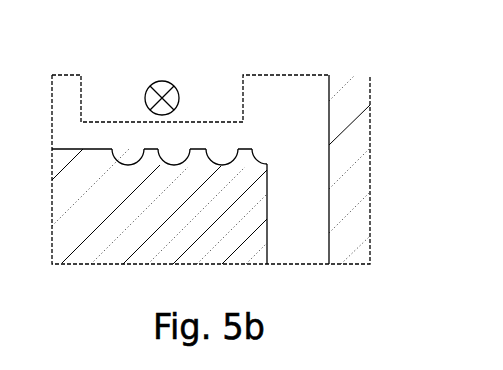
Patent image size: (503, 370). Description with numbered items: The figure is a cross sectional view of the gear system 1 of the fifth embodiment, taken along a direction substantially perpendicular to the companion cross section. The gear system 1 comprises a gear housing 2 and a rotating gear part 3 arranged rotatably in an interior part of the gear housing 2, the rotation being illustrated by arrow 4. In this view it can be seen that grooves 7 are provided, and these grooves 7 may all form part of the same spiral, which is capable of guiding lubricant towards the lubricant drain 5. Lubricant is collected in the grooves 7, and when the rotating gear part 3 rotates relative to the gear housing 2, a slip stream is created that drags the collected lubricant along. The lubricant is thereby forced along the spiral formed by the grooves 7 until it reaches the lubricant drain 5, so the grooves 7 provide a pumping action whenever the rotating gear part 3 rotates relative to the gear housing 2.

The gear system 1 is at (405, 111).
The gear housing 2 is at (220, 90).
The rotating gear part 3 is at (84, 245).
The arrow 4 is at (162, 81).
The lubricant drain 5 is at (310, 165).
The grooves 7 is at (222, 165).